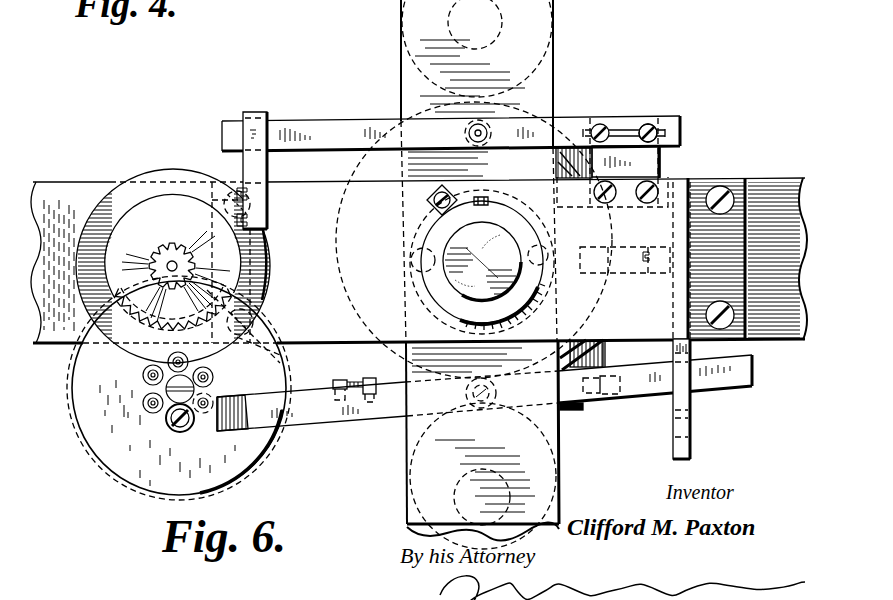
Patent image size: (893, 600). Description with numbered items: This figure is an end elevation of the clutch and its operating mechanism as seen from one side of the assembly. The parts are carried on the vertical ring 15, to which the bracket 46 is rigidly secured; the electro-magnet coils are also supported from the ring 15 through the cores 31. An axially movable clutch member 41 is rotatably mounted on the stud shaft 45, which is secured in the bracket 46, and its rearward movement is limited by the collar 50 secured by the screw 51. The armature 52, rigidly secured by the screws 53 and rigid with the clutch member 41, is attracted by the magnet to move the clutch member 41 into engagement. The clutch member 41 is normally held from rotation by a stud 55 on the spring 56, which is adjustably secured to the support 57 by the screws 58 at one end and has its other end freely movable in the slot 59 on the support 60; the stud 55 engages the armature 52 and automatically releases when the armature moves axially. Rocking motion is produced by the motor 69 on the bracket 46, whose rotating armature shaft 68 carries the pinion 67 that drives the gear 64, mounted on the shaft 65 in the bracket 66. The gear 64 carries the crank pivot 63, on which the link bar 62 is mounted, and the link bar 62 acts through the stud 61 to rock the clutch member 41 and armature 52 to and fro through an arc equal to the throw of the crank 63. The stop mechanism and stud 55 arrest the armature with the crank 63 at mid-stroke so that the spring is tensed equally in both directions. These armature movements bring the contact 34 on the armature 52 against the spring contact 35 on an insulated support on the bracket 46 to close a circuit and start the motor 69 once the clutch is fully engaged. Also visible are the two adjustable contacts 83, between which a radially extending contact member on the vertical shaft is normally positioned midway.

The ring 15 is at (60, 193).
The cores 31 is at (493, 30).
The contact 34 is at (580, 178).
The spring contact 35 is at (630, 253).
The clutch member 41 is at (598, 362).
The stud shaft 45 is at (482, 261).
The bracket 46 is at (378, 333).
The collar 50 is at (507, 224).
The screw 51 is at (488, 199).
The armature 52 is at (558, 462).
The screws 53 is at (411, 252).
The stud 55 is at (484, 128).
The spring 56 is at (327, 125).
The support 57 is at (662, 160).
The screws 58 is at (647, 125).
The slot 59 is at (268, 118).
The support 60 is at (253, 112).
The stud 61 is at (470, 394).
The link bar 62 is at (361, 415).
The crank pivot 63 is at (185, 428).
The gear 64 is at (103, 445).
The shaft 65 is at (175, 395).
The bracket 66 is at (283, 357).
The pinion 67 is at (170, 262).
The armature shaft 68 is at (188, 202).
The motor 69 is at (172, 177).
The adjustable contacts 83 is at (338, 384).